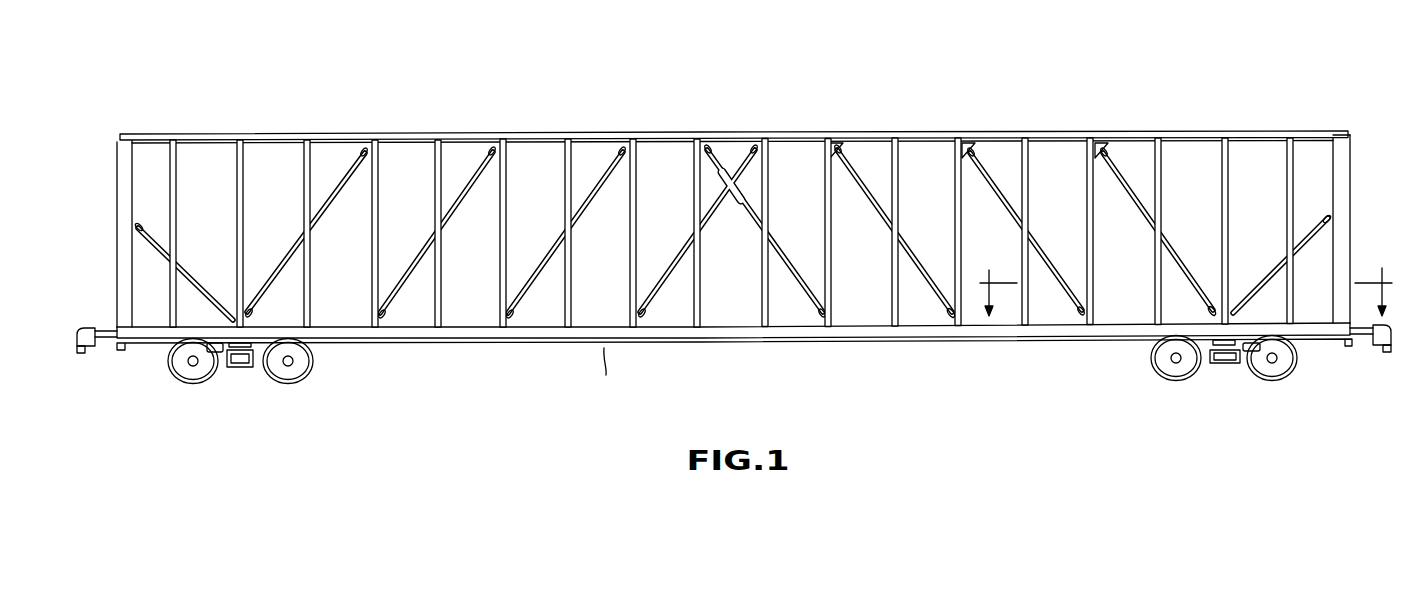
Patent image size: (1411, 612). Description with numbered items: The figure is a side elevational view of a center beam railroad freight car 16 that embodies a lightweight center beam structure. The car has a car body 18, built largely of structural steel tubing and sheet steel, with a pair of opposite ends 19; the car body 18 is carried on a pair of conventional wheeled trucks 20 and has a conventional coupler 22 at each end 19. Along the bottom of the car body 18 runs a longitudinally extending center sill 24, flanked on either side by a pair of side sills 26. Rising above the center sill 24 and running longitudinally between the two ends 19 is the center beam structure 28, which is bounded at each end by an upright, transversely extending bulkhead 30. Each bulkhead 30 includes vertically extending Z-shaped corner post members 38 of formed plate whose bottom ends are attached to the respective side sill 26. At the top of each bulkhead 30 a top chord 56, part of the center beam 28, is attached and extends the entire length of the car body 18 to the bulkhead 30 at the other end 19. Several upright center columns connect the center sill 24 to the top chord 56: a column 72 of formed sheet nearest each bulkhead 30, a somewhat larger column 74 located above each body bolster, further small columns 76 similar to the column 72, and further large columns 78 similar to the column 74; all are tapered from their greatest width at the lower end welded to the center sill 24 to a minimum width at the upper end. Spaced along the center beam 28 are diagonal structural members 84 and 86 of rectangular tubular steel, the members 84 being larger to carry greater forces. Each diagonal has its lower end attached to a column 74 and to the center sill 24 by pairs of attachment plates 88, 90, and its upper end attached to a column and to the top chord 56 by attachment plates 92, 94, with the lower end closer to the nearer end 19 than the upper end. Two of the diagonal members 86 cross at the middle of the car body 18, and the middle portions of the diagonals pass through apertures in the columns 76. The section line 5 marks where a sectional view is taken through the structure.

The center beam railroad freight car 16 is at (1048, 47).
The car body 18 is at (880, 344).
The opposite ends 19 is at (117, 151).
The wheeled trucks 20 is at (288, 385).
The coupler 22 is at (83, 353).
The center sill 24 is at (800, 345).
The side sills 26 is at (670, 340).
The center beam structure 28 is at (1206, 134).
The bulkheads 30 is at (137, 166).
The corner post members 38 is at (1345, 152).
The top chord 56 is at (417, 134).
The column 72 is at (1307, 135).
The column 74 is at (1232, 155).
The small columns 76 is at (1036, 157).
The large columns 78 is at (967, 222).
The diagonal structural members 84 is at (999, 158).
The diagonal structural members 86 is at (661, 257).
The attachment plates 88 is at (1202, 312).
The attachment plates 90 is at (940, 325).
The attachment plates 92 is at (1113, 157).
The attachment plates 94 is at (850, 150).
The section line 5- 5 is at (1186, 277).